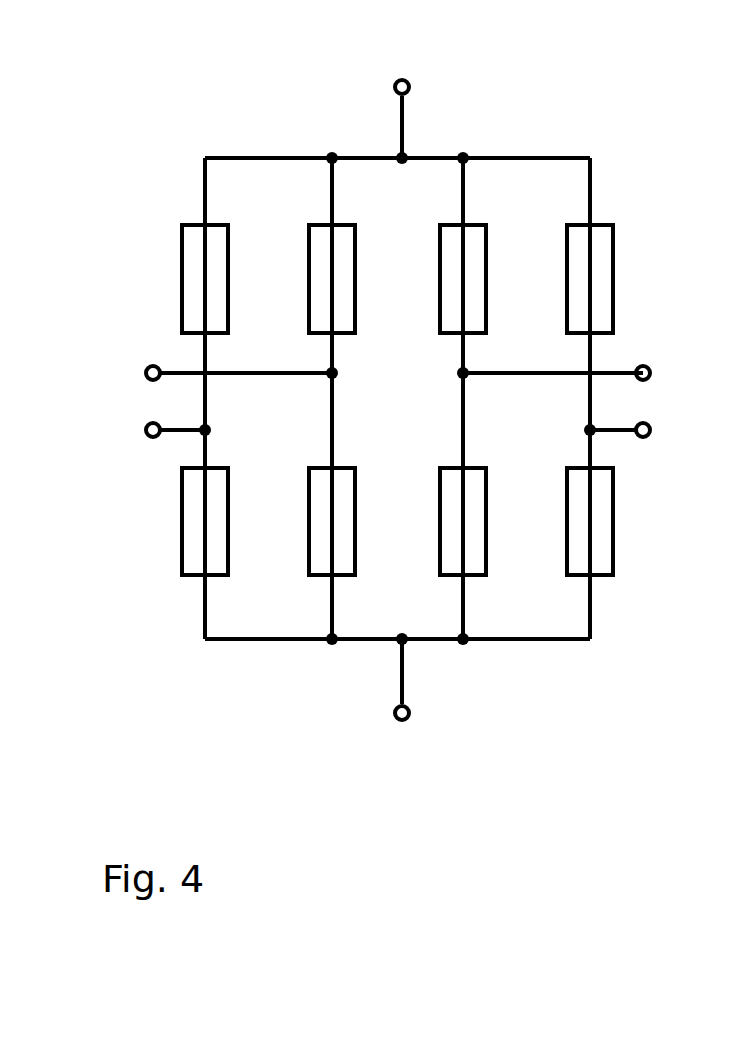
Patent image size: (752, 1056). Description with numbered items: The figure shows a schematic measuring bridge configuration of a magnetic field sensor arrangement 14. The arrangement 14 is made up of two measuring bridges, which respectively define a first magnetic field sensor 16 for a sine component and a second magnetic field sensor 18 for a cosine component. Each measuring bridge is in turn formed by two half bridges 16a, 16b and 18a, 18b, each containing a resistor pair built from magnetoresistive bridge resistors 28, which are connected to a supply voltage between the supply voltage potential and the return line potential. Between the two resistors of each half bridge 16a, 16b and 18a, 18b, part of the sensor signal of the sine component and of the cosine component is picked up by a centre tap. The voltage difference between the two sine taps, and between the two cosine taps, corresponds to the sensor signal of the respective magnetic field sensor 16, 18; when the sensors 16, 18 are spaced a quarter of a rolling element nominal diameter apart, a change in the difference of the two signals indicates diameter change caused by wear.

The magnetic field sensor arrangement 14 is at (130, 218).
The first magnetic field sensor 16 is at (329, 193).
The second magnetic field sensor 18 is at (589, 193).
The half bridge 16a is at (205, 365).
The half bridge 16b is at (332, 365).
The half bridge 18a is at (463, 355).
The half bridge 18b is at (590, 355).
The magnetoresistive bridge resistor 28 is at (613, 256).